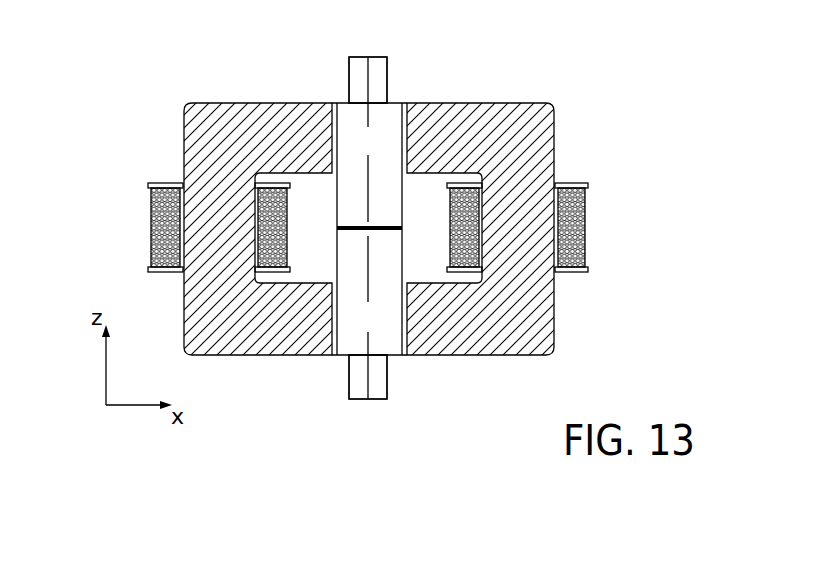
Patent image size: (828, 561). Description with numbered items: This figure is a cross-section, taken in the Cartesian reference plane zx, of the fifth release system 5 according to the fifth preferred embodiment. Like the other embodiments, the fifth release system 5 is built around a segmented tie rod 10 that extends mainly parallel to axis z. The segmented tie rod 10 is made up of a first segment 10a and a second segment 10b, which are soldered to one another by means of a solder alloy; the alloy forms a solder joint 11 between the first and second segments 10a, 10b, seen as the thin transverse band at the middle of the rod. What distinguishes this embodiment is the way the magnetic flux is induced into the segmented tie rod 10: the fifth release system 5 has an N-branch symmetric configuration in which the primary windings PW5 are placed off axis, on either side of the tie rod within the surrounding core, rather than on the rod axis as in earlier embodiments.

The fifth release system 5 is at (545, 80).
The segmented tie rod 10 is at (337, 372).
The first segment 10a is at (378, 343).
The second segment 10b is at (358, 118).
The solder joint 11 is at (392, 222).
The primary windings PW5 is at (148, 232).